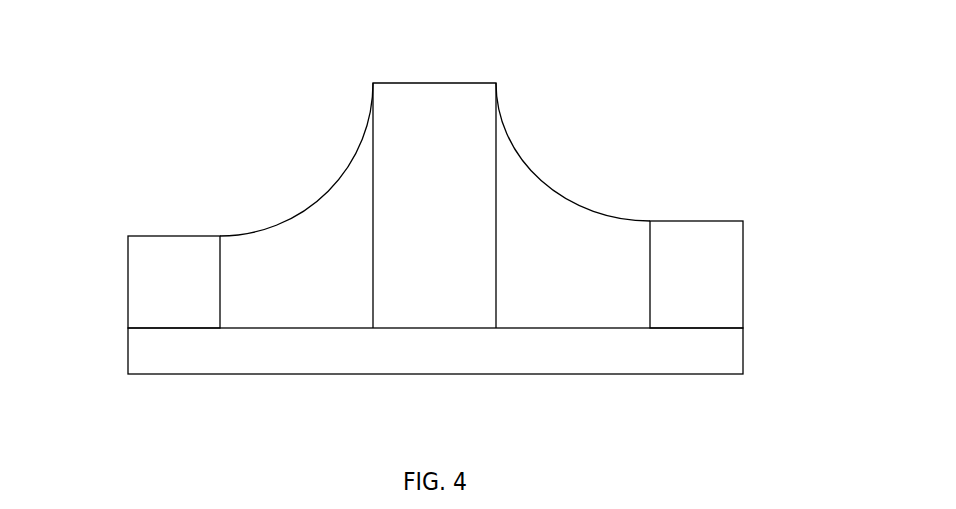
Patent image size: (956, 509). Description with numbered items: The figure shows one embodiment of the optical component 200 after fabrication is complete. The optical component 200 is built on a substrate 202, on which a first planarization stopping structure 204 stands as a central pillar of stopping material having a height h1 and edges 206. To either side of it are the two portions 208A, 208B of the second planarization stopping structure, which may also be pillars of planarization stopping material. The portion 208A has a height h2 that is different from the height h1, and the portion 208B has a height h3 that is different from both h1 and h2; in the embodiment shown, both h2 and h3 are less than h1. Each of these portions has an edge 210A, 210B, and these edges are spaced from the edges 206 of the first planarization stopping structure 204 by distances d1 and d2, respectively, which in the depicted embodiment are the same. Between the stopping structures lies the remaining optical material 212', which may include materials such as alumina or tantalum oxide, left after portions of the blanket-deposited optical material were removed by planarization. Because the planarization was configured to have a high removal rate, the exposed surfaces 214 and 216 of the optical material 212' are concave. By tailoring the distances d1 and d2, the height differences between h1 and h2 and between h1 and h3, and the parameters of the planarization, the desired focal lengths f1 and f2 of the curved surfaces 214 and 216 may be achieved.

The optical component 200 is at (455, 33).
The substrate 202 is at (715, 375).
The first planarization stopping structure 204 is at (370, 160).
The edges 206 is at (497, 72).
The second planarization stopping structure portion 208A is at (126, 277).
The second planarization stopping structure portion 208B is at (743, 300).
The edge 210A is at (220, 212).
The edge 210B is at (652, 217).
The optical material 212' is at (448, 365).
The curved surface 214 is at (250, 188).
The curved surface 216 is at (613, 203).
The focal length f1 is at (220, 93).
The focal length f2 is at (648, 87).
The height h1 is at (528, 83).
The height h2 is at (246, 238).
The height h3 is at (804, 222).
The distance d1 is at (220, 437).
The distance d2 is at (498, 437).